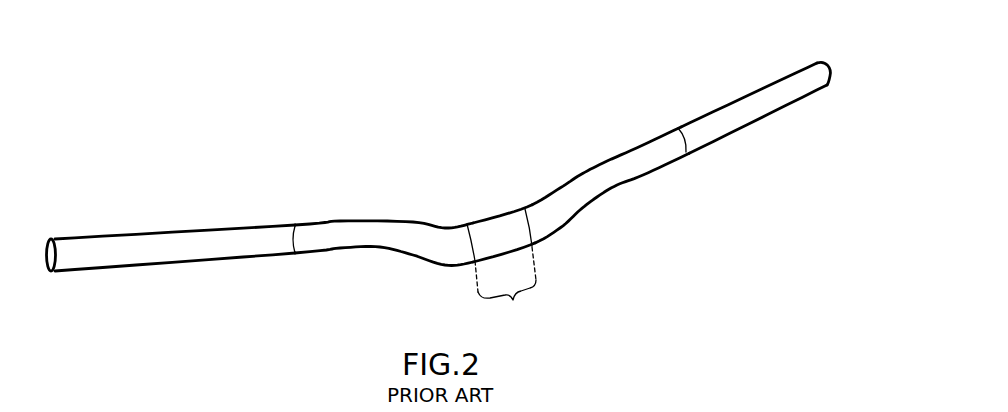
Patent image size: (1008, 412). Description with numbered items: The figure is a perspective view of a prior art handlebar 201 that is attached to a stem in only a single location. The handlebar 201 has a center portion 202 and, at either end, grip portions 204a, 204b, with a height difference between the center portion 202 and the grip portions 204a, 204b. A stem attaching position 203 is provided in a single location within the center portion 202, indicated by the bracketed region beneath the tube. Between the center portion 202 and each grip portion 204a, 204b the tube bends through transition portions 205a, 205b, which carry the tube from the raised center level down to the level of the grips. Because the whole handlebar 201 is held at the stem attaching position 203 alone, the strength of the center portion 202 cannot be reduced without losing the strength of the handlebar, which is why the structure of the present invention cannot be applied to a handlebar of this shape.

The handlebar 201 is at (464, 173).
The center portion 202 is at (493, 228).
The stem attaching position 203 is at (506, 287).
The grip portion 204a is at (748, 103).
The grip portion 204b is at (168, 245).
The right bend portion 205a is at (575, 183).
The left bend portion 205b is at (415, 225).